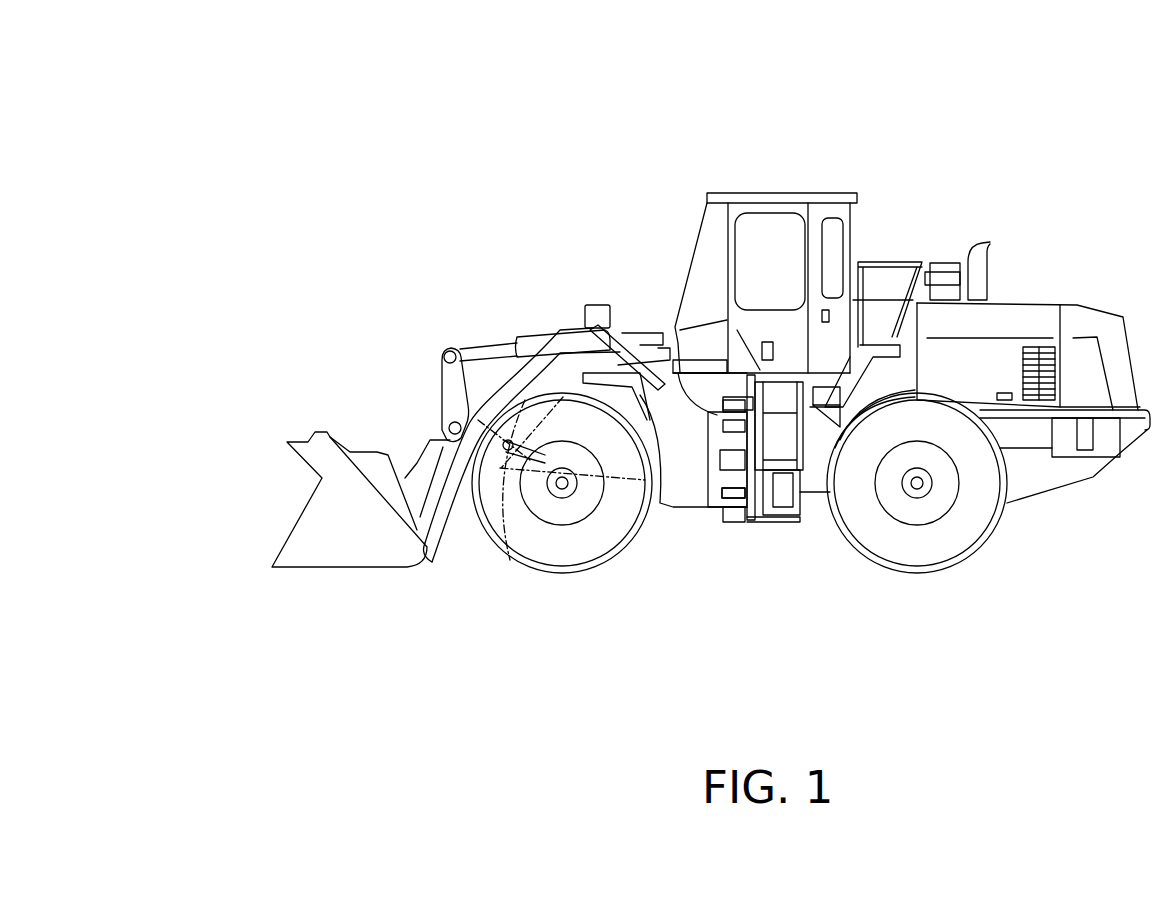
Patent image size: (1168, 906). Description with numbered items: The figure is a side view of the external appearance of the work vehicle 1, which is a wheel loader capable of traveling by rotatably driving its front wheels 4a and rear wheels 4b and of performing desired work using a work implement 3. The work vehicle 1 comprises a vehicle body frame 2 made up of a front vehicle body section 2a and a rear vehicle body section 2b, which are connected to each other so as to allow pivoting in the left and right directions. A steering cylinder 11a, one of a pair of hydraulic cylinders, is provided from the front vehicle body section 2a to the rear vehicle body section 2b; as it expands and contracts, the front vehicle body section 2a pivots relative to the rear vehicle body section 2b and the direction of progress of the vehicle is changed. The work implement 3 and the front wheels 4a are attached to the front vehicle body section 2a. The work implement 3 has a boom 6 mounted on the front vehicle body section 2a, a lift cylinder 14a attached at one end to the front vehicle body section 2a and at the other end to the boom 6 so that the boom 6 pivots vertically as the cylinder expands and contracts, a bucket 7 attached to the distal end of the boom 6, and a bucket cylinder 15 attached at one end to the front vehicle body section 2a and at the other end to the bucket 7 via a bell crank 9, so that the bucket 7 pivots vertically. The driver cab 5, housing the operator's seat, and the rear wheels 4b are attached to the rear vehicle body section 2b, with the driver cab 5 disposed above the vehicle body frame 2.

The work vehicle 1 is at (975, 112).
The vehicle body frame 2 is at (765, 533).
The front vehicle body section 2a is at (673, 497).
The rear vehicle body section 2b is at (817, 510).
The work implement 3 is at (232, 498).
The front wheels 4a is at (571, 557).
The rear wheels 4b is at (925, 555).
The driver cab 5 is at (822, 190).
The boom 6 is at (483, 423).
The bucket 7 is at (318, 438).
The bell crank 9 is at (458, 408).
The steering cylinder 11a is at (732, 508).
The lift cylinder 14a is at (508, 452).
The bucket cylinder 15 is at (530, 335).